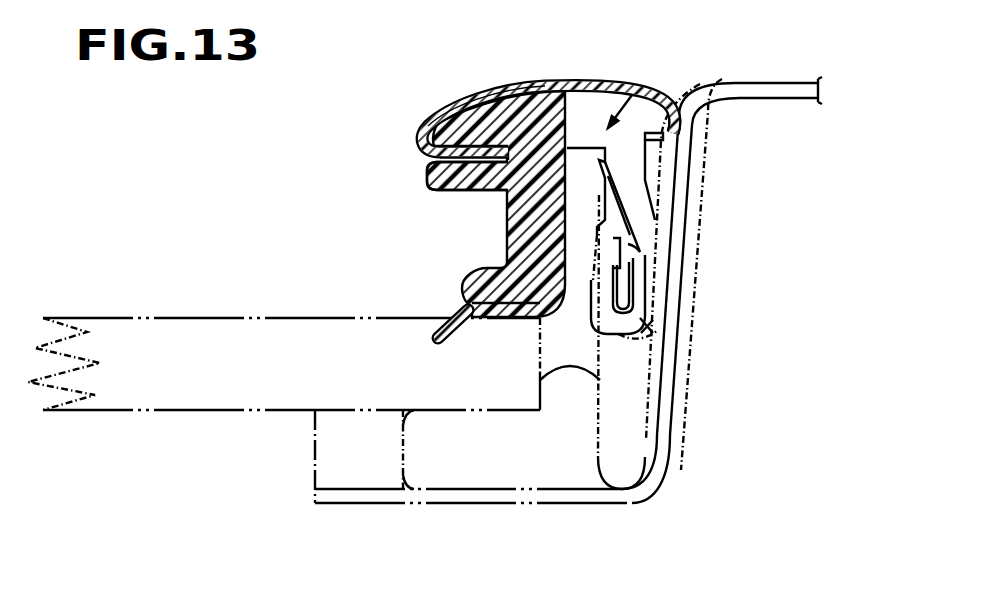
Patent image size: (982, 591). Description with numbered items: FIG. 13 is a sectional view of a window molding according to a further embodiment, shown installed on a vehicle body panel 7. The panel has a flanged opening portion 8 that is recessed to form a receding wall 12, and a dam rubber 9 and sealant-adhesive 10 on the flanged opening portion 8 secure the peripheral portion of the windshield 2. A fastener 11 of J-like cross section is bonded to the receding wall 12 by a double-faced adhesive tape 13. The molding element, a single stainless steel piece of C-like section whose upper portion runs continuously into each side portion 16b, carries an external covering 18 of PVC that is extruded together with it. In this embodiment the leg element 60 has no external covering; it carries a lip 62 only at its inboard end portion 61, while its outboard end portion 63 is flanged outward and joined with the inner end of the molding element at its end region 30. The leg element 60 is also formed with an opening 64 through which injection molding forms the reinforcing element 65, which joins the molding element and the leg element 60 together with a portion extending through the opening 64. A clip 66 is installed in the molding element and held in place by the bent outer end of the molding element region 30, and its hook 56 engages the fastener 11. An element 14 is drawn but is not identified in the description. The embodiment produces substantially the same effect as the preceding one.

The windshield 2 is at (170, 318).
The vehicle body panel 7 is at (779, 83).
The flanged opening portion 8 is at (362, 493).
The dam rubber 9 is at (318, 445).
The sealant-adhesive 10 is at (493, 473).
The fastener 11 is at (648, 322).
The receding wall 12 is at (665, 306).
The double-faced adhesive tape 13 is at (683, 190).
The bent portion 14 is at (623, 465).
The side portion 16b is at (484, 142).
The external covering 18 is at (547, 80).
The retainer 30 is at (662, 155).
The hook 56 is at (632, 266).
The leg element 60 is at (506, 240).
The inboard end portion 61 is at (540, 343).
The lip 62 is at (430, 318).
The outboard end portion 63 is at (483, 103).
The opening 64 is at (573, 145).
The reinforcing element 65 is at (505, 208).
The clip 66 is at (655, 79).